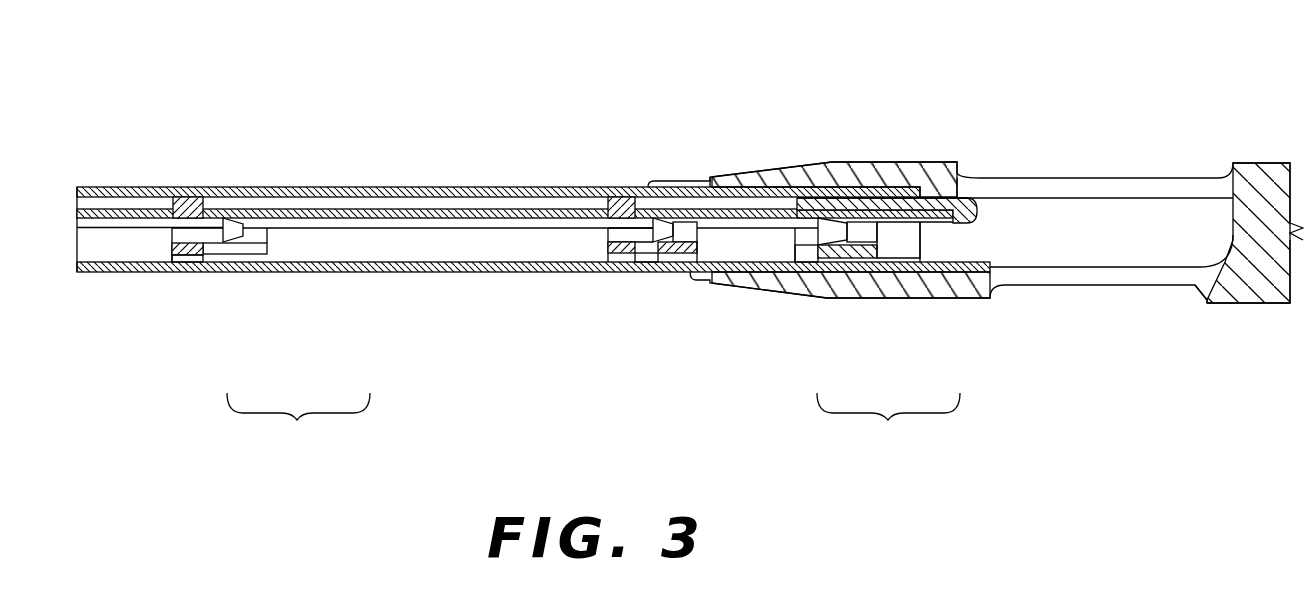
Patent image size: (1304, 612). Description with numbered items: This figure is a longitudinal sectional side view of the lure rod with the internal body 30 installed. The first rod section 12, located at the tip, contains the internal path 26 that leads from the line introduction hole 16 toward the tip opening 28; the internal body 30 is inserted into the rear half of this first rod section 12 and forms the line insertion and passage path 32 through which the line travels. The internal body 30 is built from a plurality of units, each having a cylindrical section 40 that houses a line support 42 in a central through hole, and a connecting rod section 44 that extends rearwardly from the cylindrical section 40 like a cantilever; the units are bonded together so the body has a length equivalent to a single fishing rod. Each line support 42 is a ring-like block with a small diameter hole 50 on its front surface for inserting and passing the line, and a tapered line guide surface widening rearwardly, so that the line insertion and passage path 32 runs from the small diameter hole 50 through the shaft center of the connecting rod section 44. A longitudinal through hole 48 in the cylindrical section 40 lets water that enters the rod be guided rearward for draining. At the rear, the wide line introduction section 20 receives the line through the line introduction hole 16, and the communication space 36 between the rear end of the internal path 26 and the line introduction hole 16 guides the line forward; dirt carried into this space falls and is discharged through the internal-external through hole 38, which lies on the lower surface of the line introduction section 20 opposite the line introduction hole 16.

The first rod section 12 is at (433, 187).
The line introduction hole 16 is at (1218, 176).
The line introduction section 20 is at (1133, 174).
The internal path 26 is at (483, 241).
The tip opening 28 is at (948, 243).
The internal body 30 is at (593, 432).
The line insertion and passage path 32 is at (923, 250).
The communication space 36 is at (1023, 222).
The internal-external through hole 38 is at (1195, 297).
The cylindrical section 40 is at (236, 247).
The line support 42 is at (227, 220).
The connecting rod section 44 is at (343, 218).
The longitudinal through hole 48 is at (820, 258).
The small diameter hole 50 is at (812, 236).